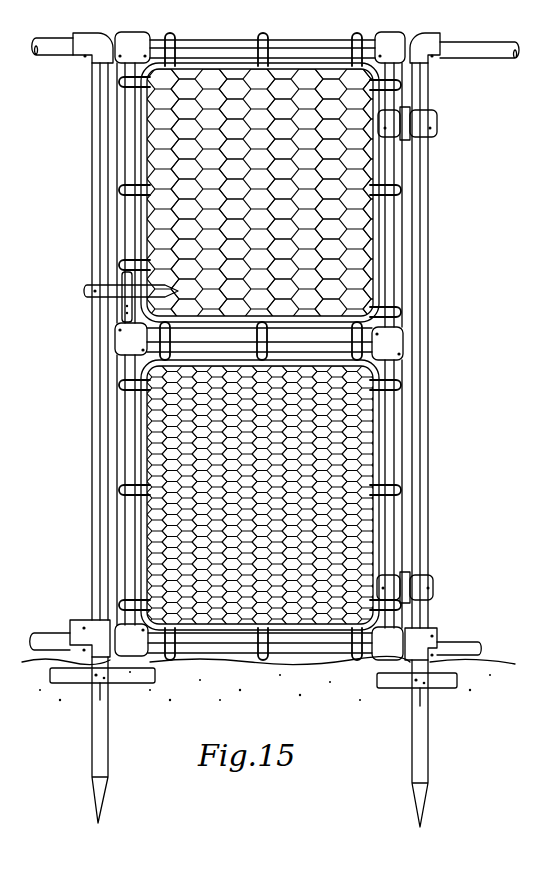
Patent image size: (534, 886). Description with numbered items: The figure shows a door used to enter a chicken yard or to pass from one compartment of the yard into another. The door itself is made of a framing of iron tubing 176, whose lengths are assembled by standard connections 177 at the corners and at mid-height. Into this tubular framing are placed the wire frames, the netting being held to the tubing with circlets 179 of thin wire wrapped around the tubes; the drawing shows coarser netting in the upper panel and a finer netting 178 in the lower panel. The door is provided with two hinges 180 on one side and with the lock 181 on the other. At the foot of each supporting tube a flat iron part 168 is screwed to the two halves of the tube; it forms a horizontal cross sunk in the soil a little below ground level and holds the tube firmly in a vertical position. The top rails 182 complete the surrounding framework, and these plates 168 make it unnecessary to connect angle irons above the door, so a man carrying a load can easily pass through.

The flat iron part 168 is at (62, 677).
The iron tubing 176 is at (78, 444).
The standard connections 177 is at (256, 346).
The wire mesh panel 178 is at (378, 456).
The circlets of thin wire 179 is at (376, 314).
The hinges 180 is at (420, 120).
The lock 181 is at (90, 290).
The top rail pipe 182 is at (274, 346).